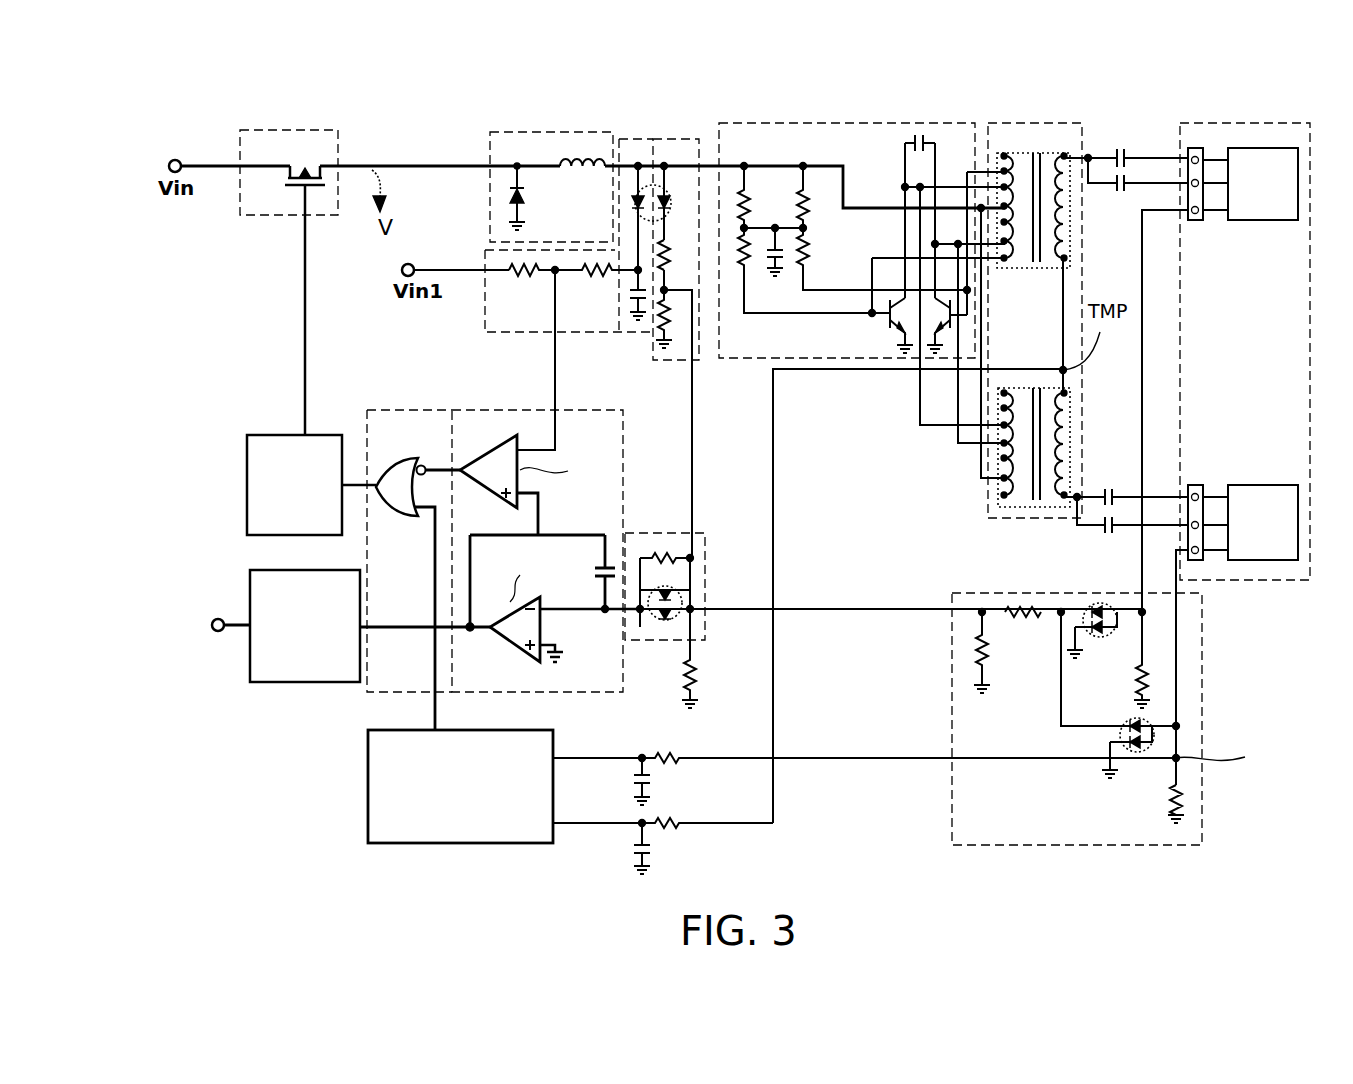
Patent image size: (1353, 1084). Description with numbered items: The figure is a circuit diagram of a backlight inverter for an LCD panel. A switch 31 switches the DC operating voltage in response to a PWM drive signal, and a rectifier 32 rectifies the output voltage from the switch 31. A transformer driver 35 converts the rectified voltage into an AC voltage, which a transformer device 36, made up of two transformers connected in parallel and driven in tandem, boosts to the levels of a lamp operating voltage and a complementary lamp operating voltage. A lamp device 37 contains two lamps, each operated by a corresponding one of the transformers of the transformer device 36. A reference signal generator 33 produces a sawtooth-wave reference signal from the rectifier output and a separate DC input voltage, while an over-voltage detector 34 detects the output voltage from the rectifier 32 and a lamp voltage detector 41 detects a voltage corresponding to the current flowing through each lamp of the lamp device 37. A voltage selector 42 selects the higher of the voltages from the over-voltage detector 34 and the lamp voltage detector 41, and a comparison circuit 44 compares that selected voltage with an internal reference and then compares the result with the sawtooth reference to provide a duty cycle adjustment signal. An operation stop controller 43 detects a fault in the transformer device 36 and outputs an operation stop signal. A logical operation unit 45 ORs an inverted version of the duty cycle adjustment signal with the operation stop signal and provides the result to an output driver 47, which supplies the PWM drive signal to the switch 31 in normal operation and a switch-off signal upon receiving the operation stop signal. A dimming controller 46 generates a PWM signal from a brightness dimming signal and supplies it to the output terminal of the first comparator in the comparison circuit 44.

The switch 31 is at (297, 130).
The rectifier 32 is at (548, 132).
The reference signal generator 33 is at (632, 139).
The over-voltage detector 34 is at (683, 139).
The transformer driver 35 is at (860, 123).
The transformer device 36 is at (1060, 123).
The lamp device 37 is at (1258, 123).
The lamp voltage detector 41 is at (1078, 845).
The voltage selector 42 is at (706, 557).
The operation stop controller 43 is at (492, 843).
The comparison circuit 44 is at (522, 410).
The logical operation unit 45 is at (425, 410).
The dimming controller 46 is at (292, 682).
The output driver 47 is at (247, 482).